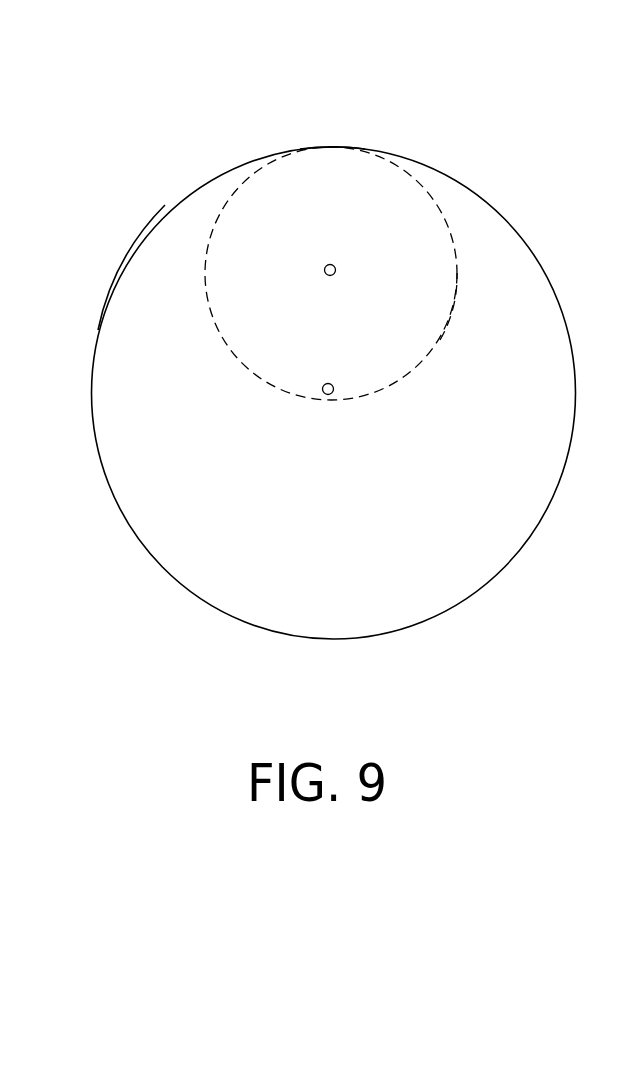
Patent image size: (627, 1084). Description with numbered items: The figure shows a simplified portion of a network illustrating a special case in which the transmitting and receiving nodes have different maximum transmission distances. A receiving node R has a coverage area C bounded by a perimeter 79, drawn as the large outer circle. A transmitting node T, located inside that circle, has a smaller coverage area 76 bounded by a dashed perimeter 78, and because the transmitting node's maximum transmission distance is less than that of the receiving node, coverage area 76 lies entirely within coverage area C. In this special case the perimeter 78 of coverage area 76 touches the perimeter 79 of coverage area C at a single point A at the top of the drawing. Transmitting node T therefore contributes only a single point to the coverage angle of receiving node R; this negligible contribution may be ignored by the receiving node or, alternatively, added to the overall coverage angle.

The perimeter of coverage area C 79 is at (532, 538).
The coverage area of transmitting node 76 is at (238, 357).
The perimeter of coverage area 76 78 is at (413, 370).
The single point A is at (332, 147).
The coverage area of receiving node C is at (133, 273).
The transmitting node T is at (324, 268).
The receiving node R is at (333, 395).